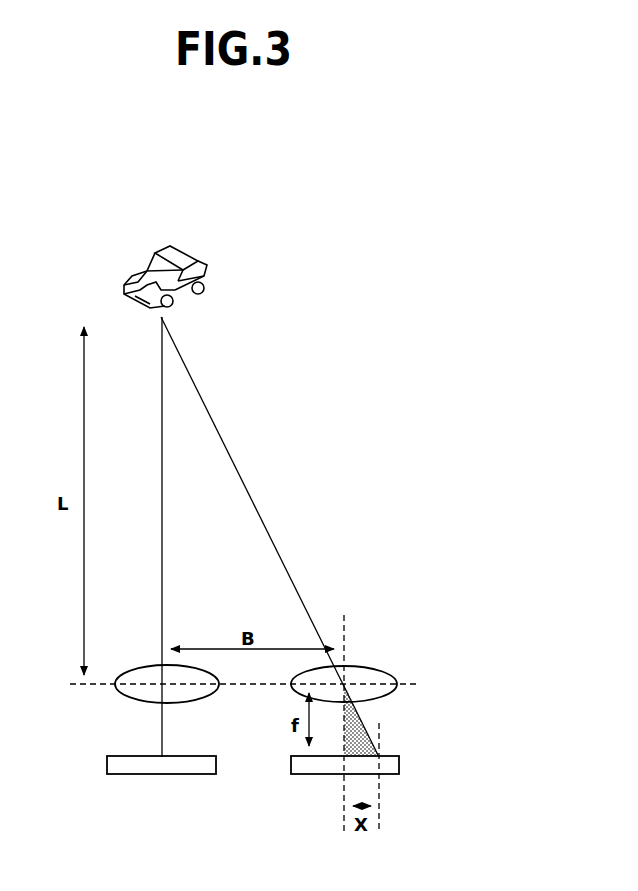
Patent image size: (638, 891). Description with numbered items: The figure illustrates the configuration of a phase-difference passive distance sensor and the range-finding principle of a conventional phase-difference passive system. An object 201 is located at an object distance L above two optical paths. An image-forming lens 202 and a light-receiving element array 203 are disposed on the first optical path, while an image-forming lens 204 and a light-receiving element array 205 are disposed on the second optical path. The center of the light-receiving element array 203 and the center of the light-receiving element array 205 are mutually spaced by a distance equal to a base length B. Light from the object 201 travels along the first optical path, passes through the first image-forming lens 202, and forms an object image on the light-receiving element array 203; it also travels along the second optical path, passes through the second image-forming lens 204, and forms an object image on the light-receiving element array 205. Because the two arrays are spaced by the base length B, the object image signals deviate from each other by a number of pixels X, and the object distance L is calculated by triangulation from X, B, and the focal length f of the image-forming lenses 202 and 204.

The object 201 is at (212, 275).
The image-forming lens 202 is at (125, 667).
The light-receiving element array 203 is at (130, 775).
The image-forming lens 204 is at (382, 666).
The light-receiving element array 205 is at (310, 776).